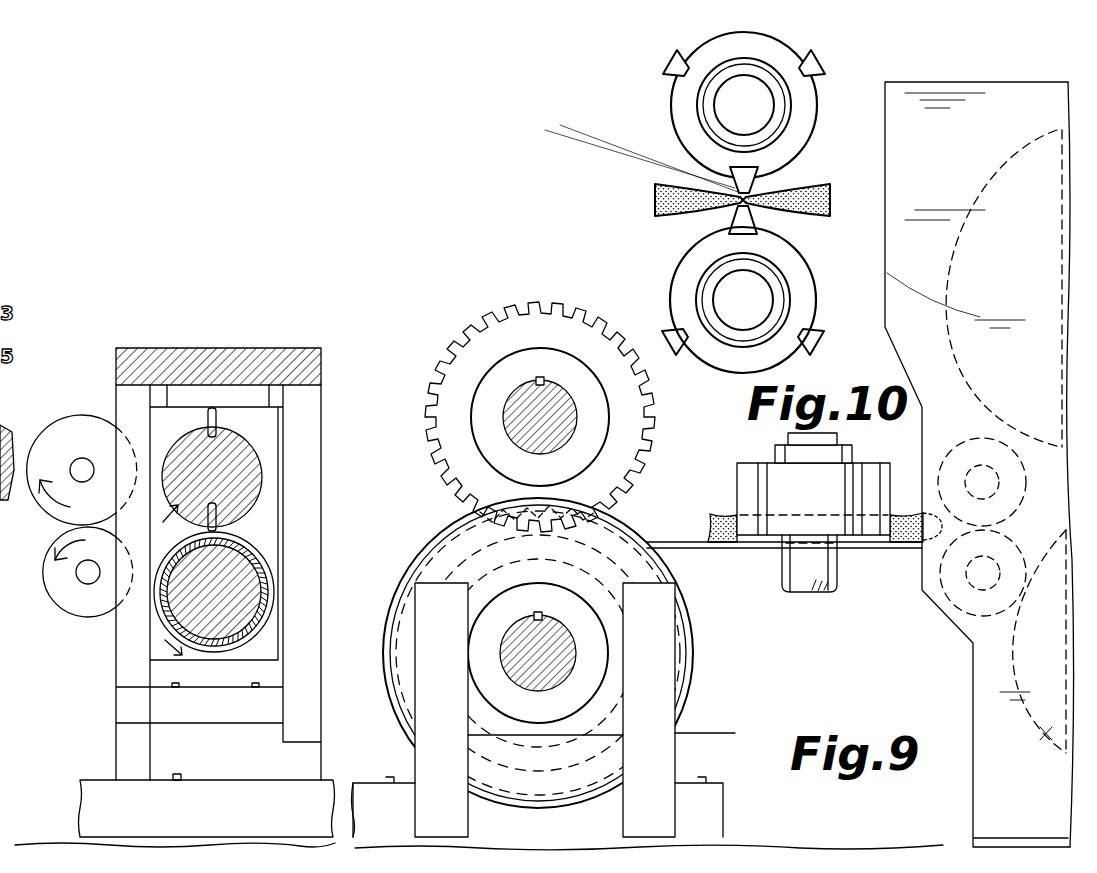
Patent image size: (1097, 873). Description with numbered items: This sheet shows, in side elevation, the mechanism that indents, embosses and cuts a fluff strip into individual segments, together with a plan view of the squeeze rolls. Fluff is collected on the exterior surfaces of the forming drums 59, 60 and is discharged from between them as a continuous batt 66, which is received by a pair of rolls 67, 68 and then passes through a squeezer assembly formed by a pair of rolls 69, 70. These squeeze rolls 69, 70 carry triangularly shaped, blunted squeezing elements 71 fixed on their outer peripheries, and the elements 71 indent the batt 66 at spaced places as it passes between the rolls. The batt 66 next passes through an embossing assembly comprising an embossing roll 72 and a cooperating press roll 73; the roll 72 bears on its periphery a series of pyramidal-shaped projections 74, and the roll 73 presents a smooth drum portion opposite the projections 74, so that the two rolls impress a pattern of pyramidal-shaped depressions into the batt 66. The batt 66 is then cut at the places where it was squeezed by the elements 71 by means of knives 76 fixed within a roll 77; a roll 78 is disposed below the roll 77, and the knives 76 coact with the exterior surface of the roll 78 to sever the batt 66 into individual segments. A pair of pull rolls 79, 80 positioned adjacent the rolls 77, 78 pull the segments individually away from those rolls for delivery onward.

In FIG. 9, the forming drum 59 is at (1017, 145).
In FIG. 9, the forming drum 60 is at (1046, 735).
In FIG. 9, the continuous batt 66 is at (905, 538).
In FIG. 9, the roll 67 is at (972, 445).
In FIG. 9, the roll 68 is at (952, 615).
In FIG. 10, the squeeze roll 69 is at (672, 120).
In FIG. 9, the squeeze roll 70 is at (737, 470).
In FIG. 10, the squeeze roll 70 is at (812, 268).
In FIG. 10, the squeezing element 71 is at (672, 62).
In FIG. 9, the embossing roll 72 is at (540, 394).
In FIG. 9, the press roll 73 is at (422, 560).
In FIG. 9, the pyramidal-shaped projections 74 is at (545, 307).
In FIG. 9, the knife 76 is at (220, 414).
In FIG. 9, the knife roll 77 is at (258, 476).
In FIG. 9, the roll 78 is at (278, 598).
In FIG. 9, the pull roll 79 is at (82, 420).
In FIG. 9, the pull roll 80 is at (72, 612).